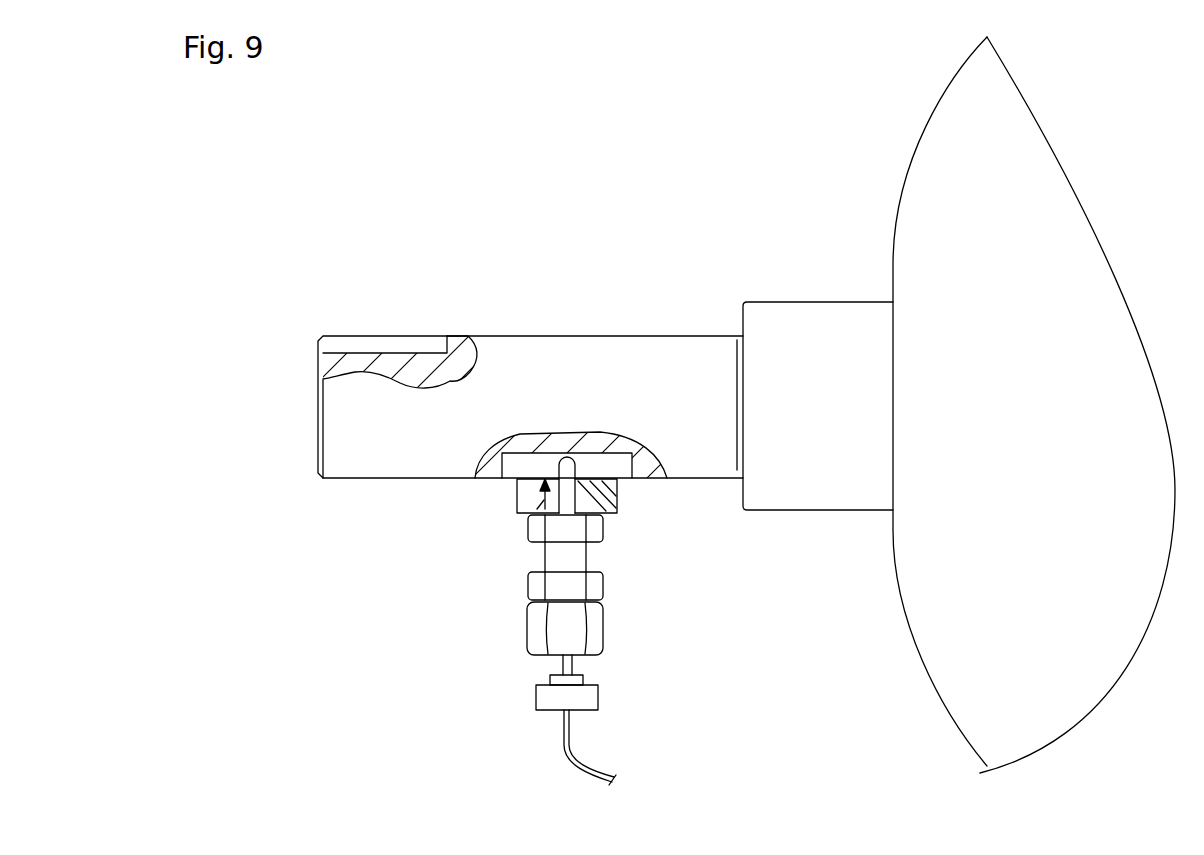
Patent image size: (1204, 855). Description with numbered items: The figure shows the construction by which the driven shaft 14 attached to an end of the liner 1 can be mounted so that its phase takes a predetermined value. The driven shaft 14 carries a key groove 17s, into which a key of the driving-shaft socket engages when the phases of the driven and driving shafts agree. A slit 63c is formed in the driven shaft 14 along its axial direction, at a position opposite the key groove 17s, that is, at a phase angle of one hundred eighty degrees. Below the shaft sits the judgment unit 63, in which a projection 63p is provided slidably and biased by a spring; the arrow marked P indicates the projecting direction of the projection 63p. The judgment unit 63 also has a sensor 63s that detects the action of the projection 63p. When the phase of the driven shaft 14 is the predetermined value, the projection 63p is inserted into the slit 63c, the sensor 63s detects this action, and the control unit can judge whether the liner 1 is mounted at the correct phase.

The liner 1 is at (940, 706).
The driven shaft 14 is at (575, 336).
The key groove 17s is at (388, 338).
The judgment unit 63 is at (493, 631).
The slit 63c is at (510, 482).
The projection 63p is at (621, 482).
The sensor 63s is at (598, 697).